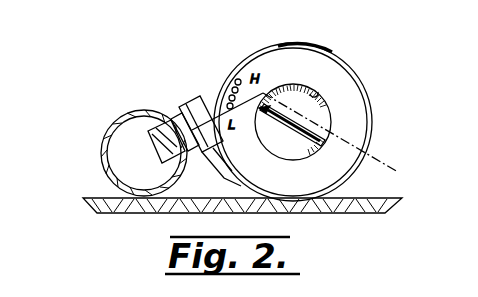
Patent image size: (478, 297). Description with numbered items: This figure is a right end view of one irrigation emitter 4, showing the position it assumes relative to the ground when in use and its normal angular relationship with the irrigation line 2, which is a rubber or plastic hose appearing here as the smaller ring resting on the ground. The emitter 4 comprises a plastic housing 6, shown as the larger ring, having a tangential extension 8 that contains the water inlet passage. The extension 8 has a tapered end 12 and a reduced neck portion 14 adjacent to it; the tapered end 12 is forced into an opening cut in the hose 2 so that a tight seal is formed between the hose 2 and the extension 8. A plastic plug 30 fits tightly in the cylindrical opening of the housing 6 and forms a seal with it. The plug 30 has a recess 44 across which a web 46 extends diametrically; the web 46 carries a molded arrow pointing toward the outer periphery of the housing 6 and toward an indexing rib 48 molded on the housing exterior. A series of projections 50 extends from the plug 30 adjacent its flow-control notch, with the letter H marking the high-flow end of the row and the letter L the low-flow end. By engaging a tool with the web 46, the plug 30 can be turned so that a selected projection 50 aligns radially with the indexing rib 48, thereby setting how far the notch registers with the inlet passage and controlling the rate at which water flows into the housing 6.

The irrigation line 2 is at (105, 146).
The irrigation emitter 4 is at (200, 120).
The plastic housing 6 is at (282, 45).
The tangential extension 8 is at (185, 107).
The tapered end 12 is at (162, 163).
The reduced neck portion 14 is at (201, 162).
The plastic plug 30 is at (343, 102).
The recess 44 is at (314, 92).
The web 46 is at (293, 122).
The indexing rib 48 is at (222, 94).
The projections 50 is at (238, 79).